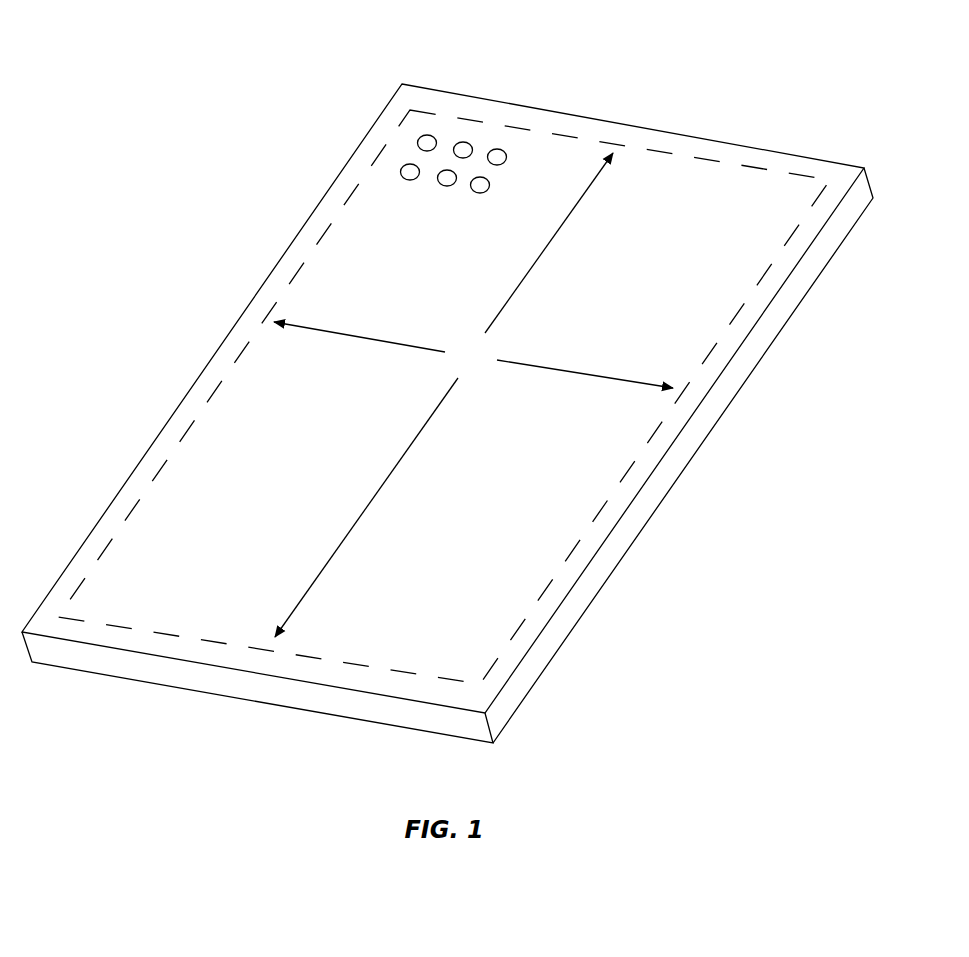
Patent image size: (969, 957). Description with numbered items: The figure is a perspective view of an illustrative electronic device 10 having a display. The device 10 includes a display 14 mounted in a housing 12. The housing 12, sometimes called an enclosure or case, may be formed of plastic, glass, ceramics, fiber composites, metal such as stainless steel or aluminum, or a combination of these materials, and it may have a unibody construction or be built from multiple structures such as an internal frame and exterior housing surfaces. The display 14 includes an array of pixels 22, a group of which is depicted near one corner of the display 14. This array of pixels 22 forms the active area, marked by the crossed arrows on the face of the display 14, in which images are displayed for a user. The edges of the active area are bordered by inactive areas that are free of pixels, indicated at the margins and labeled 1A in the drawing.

The electronic device 10 is at (690, 54).
The housing 12 is at (797, 287).
The display 14 is at (288, 368).
The pixels 22 is at (463, 141).
The cross-section indicator 1A is at (757, 162).